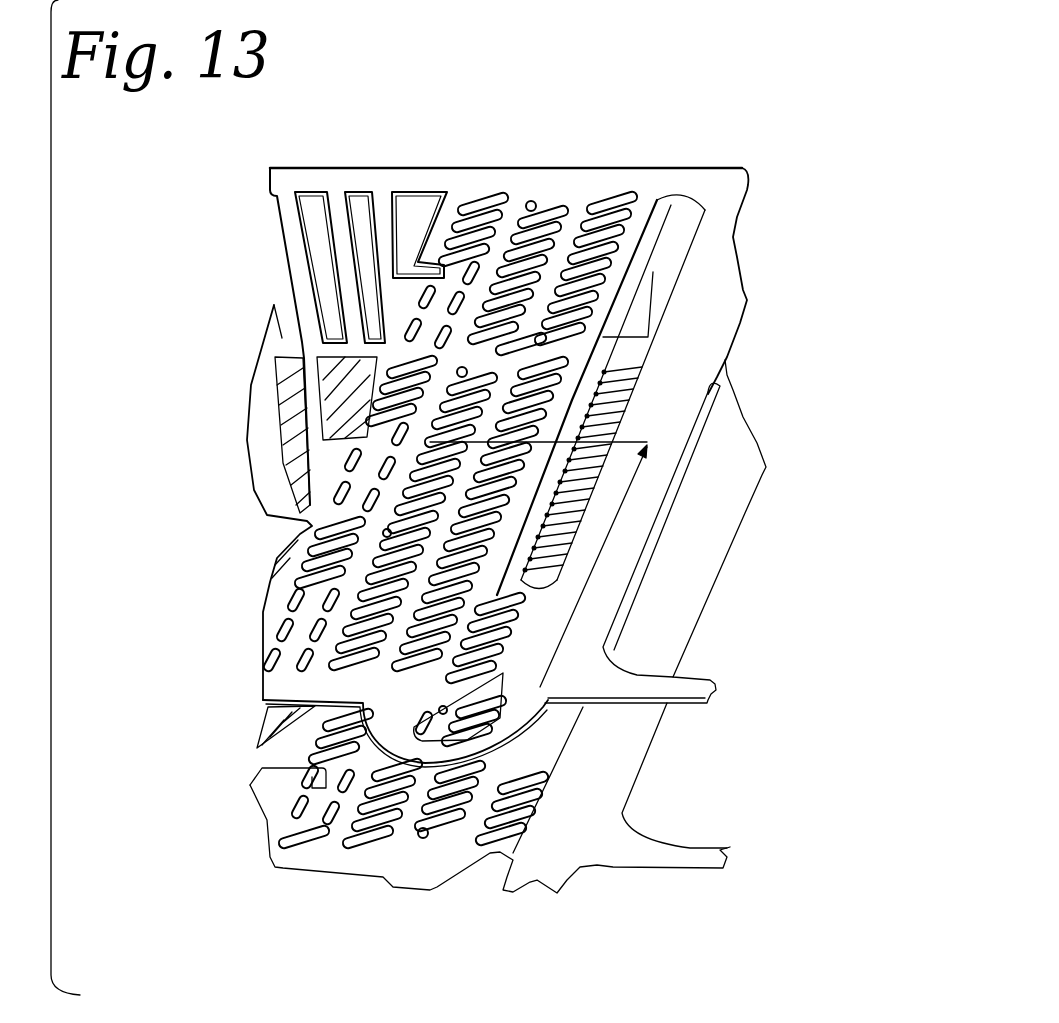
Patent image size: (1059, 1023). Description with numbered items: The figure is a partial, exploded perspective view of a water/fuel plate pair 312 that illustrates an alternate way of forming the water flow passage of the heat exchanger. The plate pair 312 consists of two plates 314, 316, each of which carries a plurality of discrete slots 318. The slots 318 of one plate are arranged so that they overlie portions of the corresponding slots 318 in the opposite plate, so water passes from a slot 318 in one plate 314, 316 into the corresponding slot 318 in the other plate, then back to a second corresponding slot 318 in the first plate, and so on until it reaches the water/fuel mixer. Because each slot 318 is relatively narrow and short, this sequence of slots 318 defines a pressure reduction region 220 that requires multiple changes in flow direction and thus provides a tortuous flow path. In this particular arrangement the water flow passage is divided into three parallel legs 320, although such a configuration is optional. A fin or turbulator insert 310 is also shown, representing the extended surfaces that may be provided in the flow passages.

The pressure reduction region 220 is at (549, 189).
The fin or turbulator insert 310 is at (583, 590).
The water/fuel plate pair 312 is at (208, 468).
The plate 314 is at (725, 277).
The plate 316 is at (728, 405).
The discrete slots 318 is at (457, 495).
The parallel legs 320 is at (490, 270).